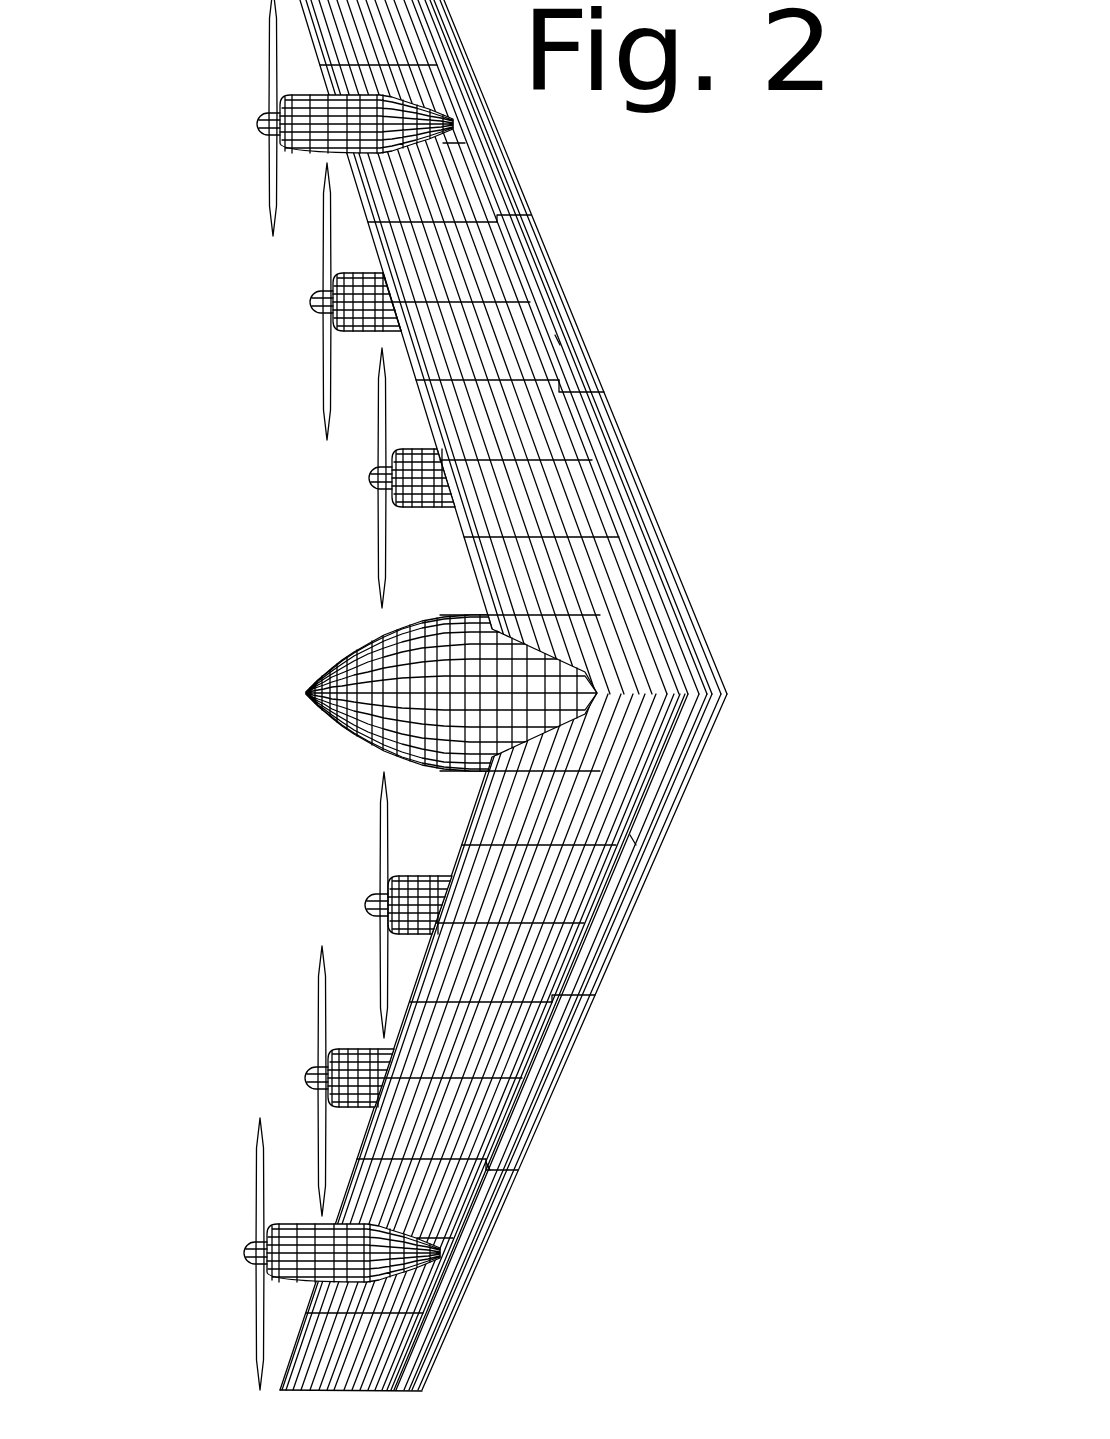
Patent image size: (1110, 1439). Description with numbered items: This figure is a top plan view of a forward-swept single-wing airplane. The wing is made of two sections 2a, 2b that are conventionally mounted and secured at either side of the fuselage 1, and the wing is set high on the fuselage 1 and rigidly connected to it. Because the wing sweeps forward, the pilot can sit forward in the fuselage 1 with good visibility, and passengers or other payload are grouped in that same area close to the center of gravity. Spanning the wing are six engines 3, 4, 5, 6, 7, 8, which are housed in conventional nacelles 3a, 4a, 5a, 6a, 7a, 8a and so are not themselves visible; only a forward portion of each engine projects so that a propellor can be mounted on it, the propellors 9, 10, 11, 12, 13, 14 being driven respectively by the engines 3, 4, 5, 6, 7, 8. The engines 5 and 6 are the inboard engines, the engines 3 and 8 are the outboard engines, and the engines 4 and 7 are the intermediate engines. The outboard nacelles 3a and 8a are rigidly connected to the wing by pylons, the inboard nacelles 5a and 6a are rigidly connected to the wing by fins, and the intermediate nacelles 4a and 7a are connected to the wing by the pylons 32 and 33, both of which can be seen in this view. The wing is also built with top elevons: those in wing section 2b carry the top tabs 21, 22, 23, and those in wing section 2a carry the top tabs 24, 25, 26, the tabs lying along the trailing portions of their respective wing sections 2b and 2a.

The fuselage 1 is at (306, 694).
The wing section 2a is at (580, 593).
The wing section 2b is at (590, 790).
The engine 3 is at (267, 1230).
The engine 4 is at (310, 1078).
The engine 5 is at (378, 905).
The engine 6 is at (382, 492).
The engine 7 is at (333, 316).
The engine 8 is at (275, 143).
The nacelle 3a is at (400, 1257).
The nacelle 4a is at (487, 1170).
The nacelle 5a is at (430, 905).
The nacelle 6a is at (432, 470).
The nacelle 7a is at (400, 320).
The nacelle 8a is at (457, 133).
The propellor 9 is at (258, 1155).
The propellor 10 is at (318, 970).
The propellor 11 is at (385, 805).
The propellor 12 is at (380, 598).
The propellor 13 is at (326, 432).
The propellor 14 is at (274, 234).
The top tab 21 is at (425, 1381).
The top tab 22 is at (550, 1060).
The top tab 23 is at (632, 840).
The top tab 24 is at (590, 440).
The top tab 25 is at (555, 340).
The top tab 26 is at (490, 185).
The pylon 32 is at (390, 1077).
The pylon 33 is at (393, 297).